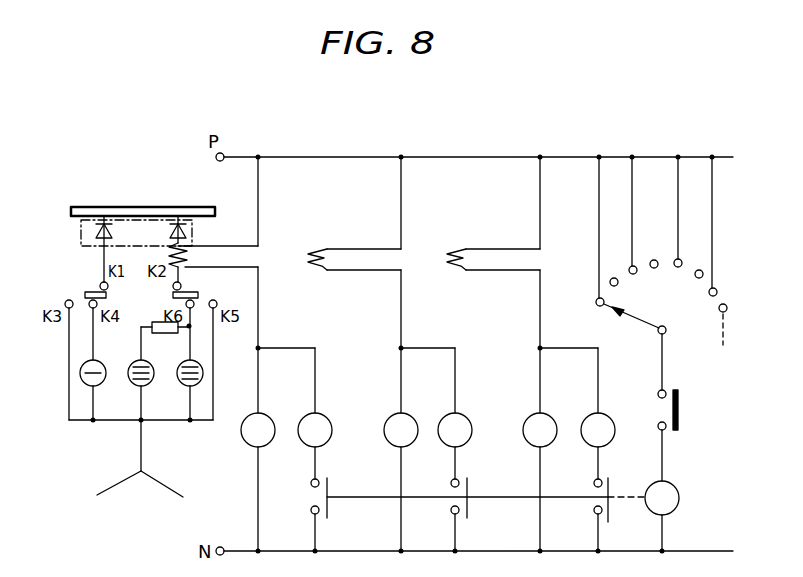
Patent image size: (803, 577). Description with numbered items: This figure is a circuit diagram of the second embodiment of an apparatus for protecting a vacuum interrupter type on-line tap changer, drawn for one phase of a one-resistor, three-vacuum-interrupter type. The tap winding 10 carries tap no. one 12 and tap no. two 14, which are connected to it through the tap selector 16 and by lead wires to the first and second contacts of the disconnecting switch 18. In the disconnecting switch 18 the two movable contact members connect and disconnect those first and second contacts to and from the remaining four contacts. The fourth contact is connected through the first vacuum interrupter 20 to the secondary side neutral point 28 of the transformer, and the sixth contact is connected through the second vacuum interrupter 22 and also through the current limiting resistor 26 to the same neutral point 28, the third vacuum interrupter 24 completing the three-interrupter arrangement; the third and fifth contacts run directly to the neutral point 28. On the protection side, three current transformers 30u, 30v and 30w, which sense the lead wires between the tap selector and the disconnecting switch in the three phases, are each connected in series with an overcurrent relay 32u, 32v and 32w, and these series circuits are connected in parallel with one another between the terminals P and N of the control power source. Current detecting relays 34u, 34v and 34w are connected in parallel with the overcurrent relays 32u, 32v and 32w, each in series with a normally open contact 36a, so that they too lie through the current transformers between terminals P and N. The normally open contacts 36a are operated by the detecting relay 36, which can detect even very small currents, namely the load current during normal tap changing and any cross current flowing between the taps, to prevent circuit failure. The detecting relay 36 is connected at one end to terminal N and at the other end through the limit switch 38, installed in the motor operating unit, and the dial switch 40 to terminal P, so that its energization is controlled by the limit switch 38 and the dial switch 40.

The tap winding 10 is at (142, 207).
The tap no. 1 12 is at (100, 225).
The tap no. 2 14 is at (180, 225).
The tap selector 16 is at (81, 226).
The disconnecting switch 18 is at (60, 279).
The vacuum interrupter VI 20 is at (82, 378).
The vacuum interrupter VII 22 is at (203, 373).
The vacuum interrupter VIII 24 is at (135, 388).
The current limiting resistor 26 is at (163, 333).
The secondary side neutral point 28 is at (140, 470).
The current transformer 30u is at (186, 260).
The current transformer 30v is at (327, 249).
The current transformer 30w is at (466, 249).
The overcurrent relay 32u is at (245, 438).
The overcurrent relay 32v is at (388, 440).
The overcurrent relay 32w is at (527, 441).
The current detecting relay 34u is at (327, 418).
The current detecting relay 34v is at (467, 418).
The current detecting relay 34w is at (609, 418).
The detecting relay 36 is at (679, 495).
The normally open contacts 36a is at (479, 514).
The limit switch 38 is at (679, 400).
The dial switch 40 is at (638, 320).